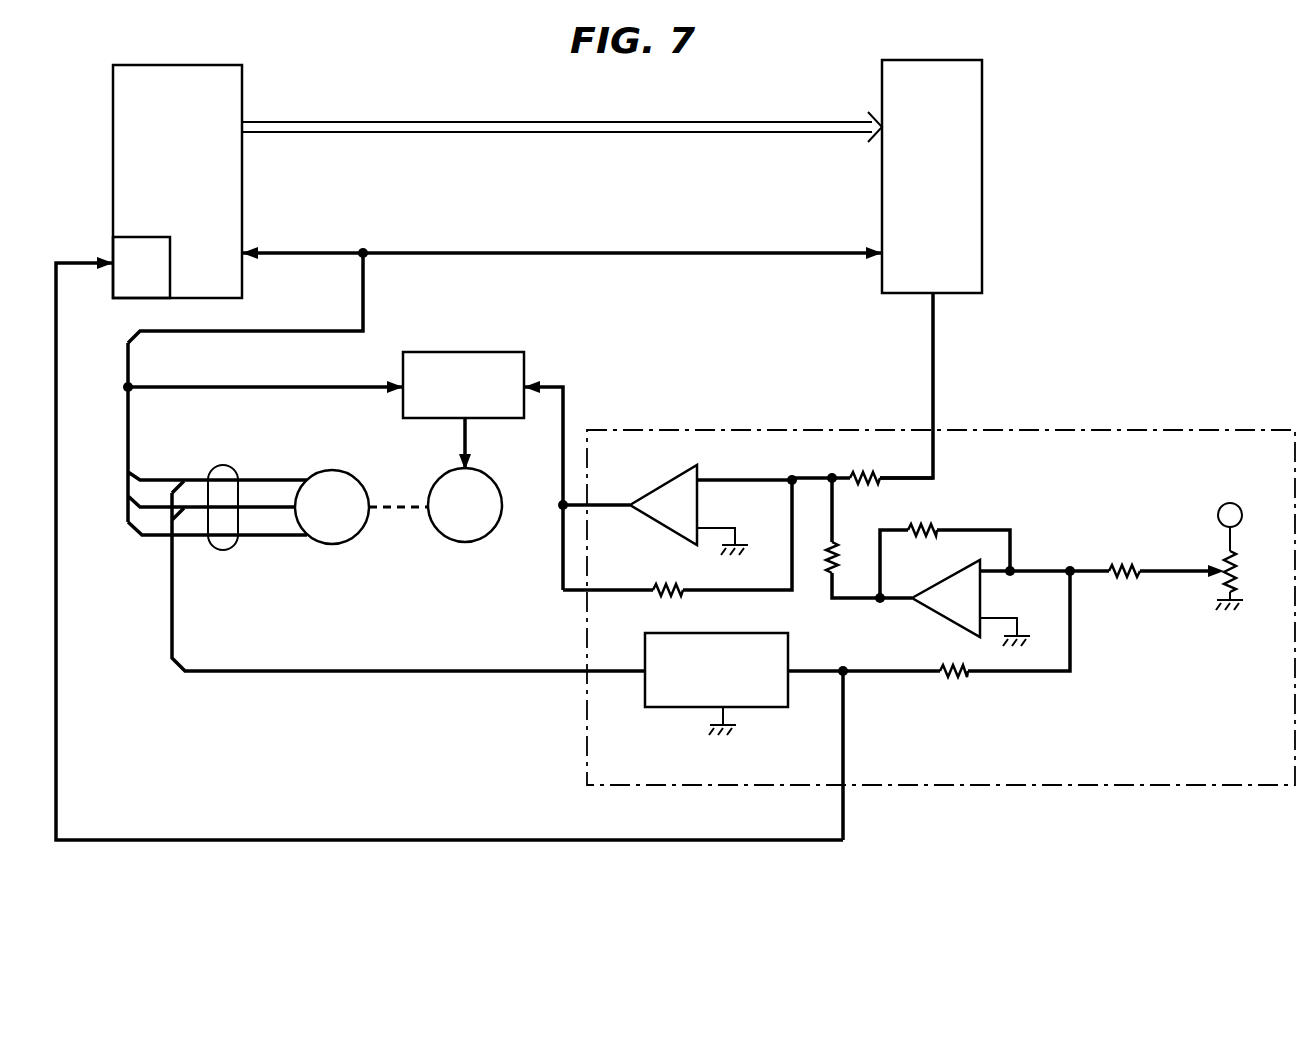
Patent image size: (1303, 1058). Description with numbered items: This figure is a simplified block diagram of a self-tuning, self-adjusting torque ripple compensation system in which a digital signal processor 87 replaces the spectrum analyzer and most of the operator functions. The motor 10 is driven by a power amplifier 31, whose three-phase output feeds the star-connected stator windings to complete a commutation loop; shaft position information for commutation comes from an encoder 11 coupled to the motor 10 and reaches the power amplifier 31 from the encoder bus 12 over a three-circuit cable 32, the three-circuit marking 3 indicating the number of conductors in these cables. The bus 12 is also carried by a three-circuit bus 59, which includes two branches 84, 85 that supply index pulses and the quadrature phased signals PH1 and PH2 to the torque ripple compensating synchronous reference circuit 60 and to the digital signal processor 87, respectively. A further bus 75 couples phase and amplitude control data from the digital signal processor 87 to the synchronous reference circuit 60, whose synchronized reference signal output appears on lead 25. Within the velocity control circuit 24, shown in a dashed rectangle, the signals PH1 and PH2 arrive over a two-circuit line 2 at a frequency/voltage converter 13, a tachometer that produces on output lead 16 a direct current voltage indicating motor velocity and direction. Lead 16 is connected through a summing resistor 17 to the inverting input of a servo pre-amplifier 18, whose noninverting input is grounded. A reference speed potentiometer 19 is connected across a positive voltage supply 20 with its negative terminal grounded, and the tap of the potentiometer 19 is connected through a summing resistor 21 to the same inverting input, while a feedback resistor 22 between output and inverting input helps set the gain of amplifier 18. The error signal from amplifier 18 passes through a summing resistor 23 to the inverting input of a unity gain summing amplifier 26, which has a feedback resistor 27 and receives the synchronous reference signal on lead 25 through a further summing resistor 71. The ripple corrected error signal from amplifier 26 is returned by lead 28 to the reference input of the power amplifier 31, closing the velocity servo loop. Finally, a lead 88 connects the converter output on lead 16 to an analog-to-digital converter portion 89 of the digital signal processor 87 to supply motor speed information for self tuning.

The digital signal processor 87 is at (113, 120).
The analog-to-digital converter portion 89 is at (113, 240).
The bus 75 is at (383, 122).
The three-circuit branch 85 is at (292, 252).
The three-circuit branch 84 is at (475, 252).
The torque ripple compensating synchronous reference circuit 60 is at (982, 245).
The lead 25 is at (933, 385).
The three-phase bus 3 is at (470, 432).
The three-circuit bus 59 is at (128, 363).
The three-circuit cable 32 is at (328, 390).
The power amplifier 31 is at (492, 352).
The lead 28 is at (563, 405).
The motor 10 is at (462, 543).
The encoder 11 is at (335, 545).
The bus 12 is at (222, 550).
The encoder signal line 2 is at (416, 662).
The frequency/voltage converter 13 is at (645, 650).
The output lead 16 is at (805, 669).
The lead 88 is at (56, 680).
The velocity control circuit 24 is at (1186, 428).
The unity gain summing amplifier 26 is at (660, 488).
The feedback resistor 27 is at (666, 588).
The summing resistor 71 is at (862, 475).
The summing resistor 23 is at (842, 556).
The resistor 22 is at (918, 523).
The servo pre-amplifier 18 is at (930, 615).
The summing resistor 17 is at (956, 678).
The summing resistor 21 is at (1128, 558).
The reference speed potentiometer 19 is at (1240, 566).
The positive voltage supply 20 is at (1228, 502).